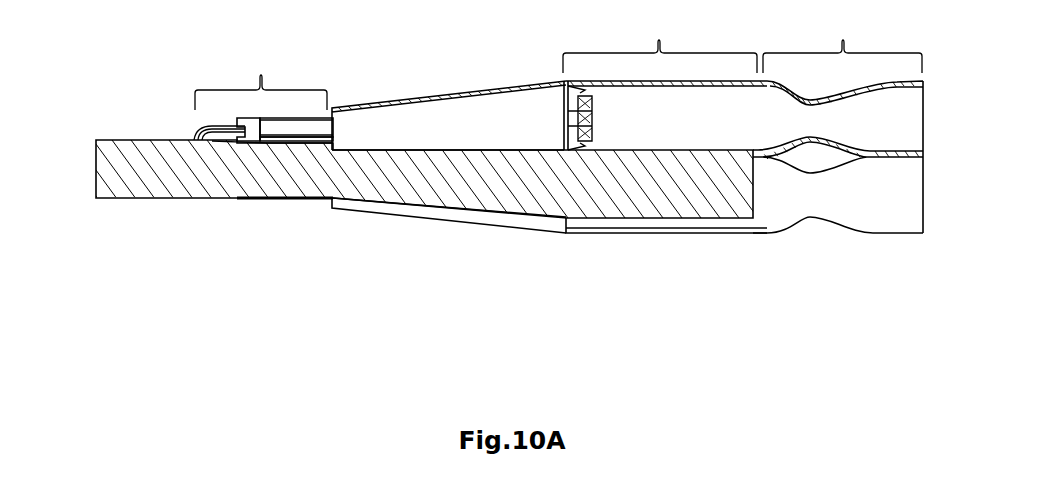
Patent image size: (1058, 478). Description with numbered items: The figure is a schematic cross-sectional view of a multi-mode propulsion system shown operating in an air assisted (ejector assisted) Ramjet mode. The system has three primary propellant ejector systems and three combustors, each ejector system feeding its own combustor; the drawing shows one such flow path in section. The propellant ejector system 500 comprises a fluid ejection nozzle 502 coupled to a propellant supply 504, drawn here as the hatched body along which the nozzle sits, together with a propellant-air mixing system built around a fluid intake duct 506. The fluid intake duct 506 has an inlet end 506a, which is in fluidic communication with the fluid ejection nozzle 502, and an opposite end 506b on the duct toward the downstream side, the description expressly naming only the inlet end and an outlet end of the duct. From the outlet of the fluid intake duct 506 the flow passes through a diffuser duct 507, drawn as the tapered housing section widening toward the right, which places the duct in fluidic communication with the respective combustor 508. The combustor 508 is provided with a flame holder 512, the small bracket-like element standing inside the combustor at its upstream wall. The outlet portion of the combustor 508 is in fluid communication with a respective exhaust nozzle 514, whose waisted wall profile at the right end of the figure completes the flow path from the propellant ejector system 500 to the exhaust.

The propellant ejector system 500 is at (261, 79).
The fluid ejection nozzle 502 is at (215, 135).
The propellant supply 504 is at (115, 163).
The fluid intake duct 506 is at (287, 126).
The inlet end 506a is at (252, 134).
The connector second portion 506b is at (320, 133).
The diffuser duct 507 is at (417, 128).
The combustor 508 is at (665, 122).
The flame holder 512 is at (593, 123).
The exhaust nozzle 514 is at (838, 122).